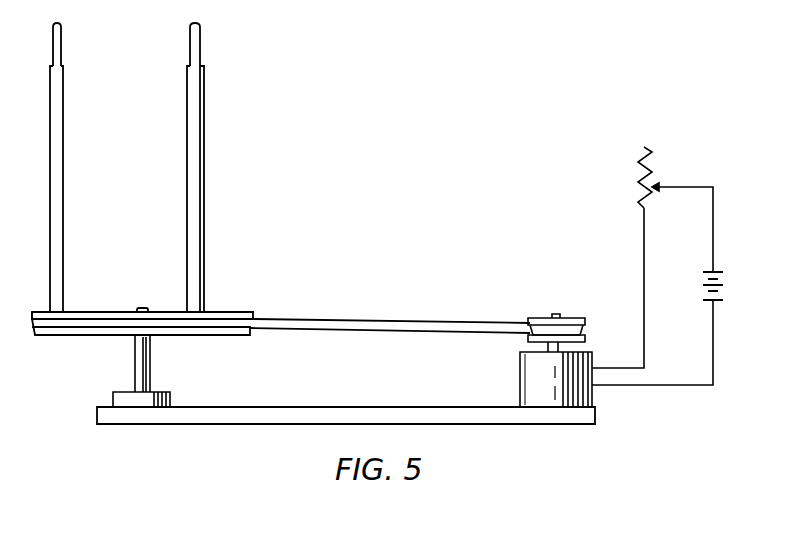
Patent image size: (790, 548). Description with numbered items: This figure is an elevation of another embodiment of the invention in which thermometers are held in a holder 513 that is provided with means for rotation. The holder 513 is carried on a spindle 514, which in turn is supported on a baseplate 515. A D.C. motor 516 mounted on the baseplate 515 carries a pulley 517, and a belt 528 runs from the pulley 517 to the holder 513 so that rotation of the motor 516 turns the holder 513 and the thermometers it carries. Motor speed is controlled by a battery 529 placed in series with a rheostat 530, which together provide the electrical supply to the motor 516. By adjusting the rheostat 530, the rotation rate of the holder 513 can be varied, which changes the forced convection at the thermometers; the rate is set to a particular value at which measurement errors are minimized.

The holder 513 is at (237, 312).
The spindle 514 is at (135, 363).
The baseplate 515 is at (293, 407).
The D.C. motor 516 is at (520, 382).
The pulley 517 is at (545, 317).
The belt 528 is at (332, 320).
The battery 529 is at (723, 283).
The rheostat 530 is at (652, 170).